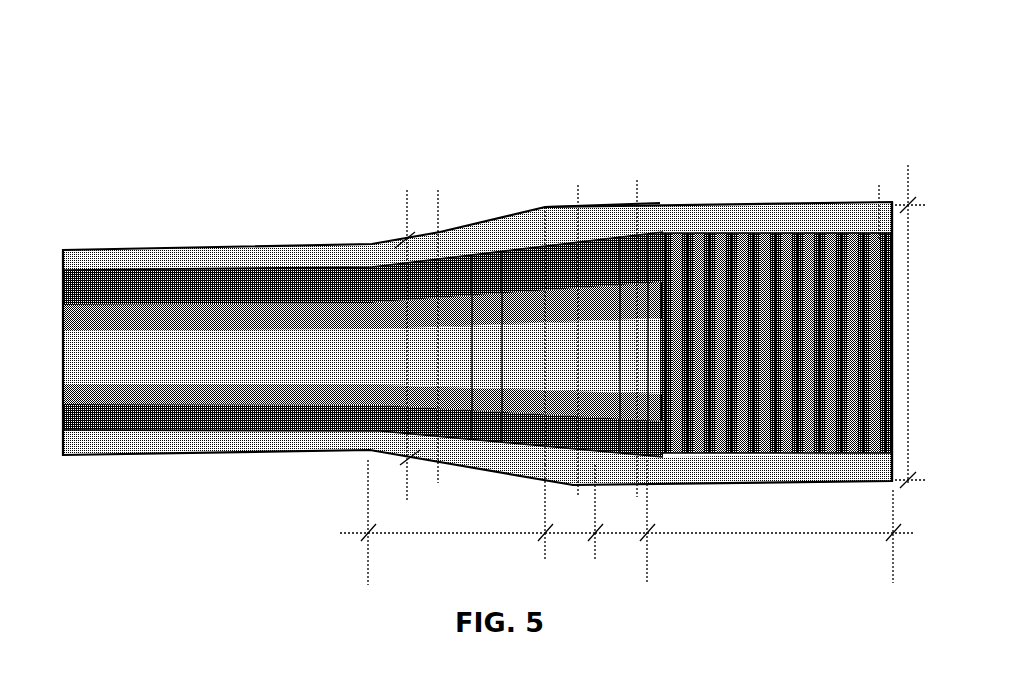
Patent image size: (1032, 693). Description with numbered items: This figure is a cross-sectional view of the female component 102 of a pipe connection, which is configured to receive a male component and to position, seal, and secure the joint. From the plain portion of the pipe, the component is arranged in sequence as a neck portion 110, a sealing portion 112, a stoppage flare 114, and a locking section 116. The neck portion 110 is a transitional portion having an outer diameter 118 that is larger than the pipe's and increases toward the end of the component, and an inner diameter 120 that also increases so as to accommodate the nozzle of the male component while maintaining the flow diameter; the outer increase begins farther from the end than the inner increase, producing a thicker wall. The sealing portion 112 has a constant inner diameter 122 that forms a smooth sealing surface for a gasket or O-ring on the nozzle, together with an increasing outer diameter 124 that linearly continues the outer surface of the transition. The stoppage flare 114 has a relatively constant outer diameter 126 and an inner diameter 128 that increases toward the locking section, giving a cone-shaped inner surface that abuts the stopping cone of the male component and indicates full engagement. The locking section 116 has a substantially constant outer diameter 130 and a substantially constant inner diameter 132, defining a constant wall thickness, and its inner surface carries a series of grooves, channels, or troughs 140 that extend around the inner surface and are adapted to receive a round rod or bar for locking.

The female component 102 is at (790, 118).
The neck portion 110 is at (446, 522).
The sealing portion 112 is at (574, 512).
The stoppage flare 114 is at (625, 521).
The locking section 116 is at (781, 536).
The outer diameter 118 is at (407, 324).
The inner diameter 120 is at (487, 222).
The constant inner diameter 122 is at (567, 247).
The increasing outer diameter 124 is at (582, 322).
The constant outer diameter 126 is at (642, 317).
The inner diameter 128 is at (596, 203).
The constant outer diameter 130 is at (910, 307).
The constant inner diameter 132 is at (868, 315).
The groove, channel, or trough 140 is at (695, 233).